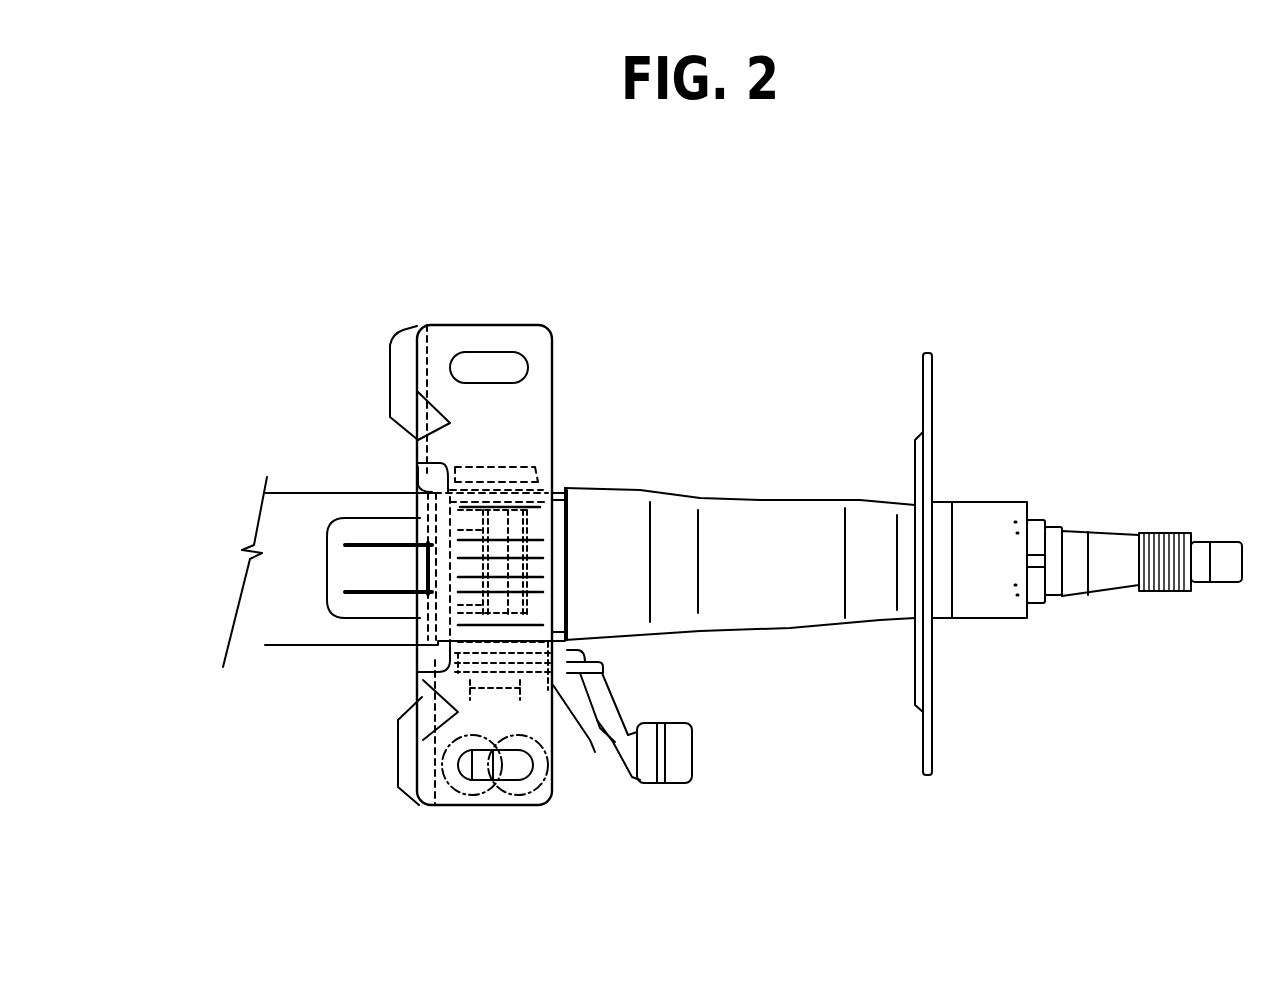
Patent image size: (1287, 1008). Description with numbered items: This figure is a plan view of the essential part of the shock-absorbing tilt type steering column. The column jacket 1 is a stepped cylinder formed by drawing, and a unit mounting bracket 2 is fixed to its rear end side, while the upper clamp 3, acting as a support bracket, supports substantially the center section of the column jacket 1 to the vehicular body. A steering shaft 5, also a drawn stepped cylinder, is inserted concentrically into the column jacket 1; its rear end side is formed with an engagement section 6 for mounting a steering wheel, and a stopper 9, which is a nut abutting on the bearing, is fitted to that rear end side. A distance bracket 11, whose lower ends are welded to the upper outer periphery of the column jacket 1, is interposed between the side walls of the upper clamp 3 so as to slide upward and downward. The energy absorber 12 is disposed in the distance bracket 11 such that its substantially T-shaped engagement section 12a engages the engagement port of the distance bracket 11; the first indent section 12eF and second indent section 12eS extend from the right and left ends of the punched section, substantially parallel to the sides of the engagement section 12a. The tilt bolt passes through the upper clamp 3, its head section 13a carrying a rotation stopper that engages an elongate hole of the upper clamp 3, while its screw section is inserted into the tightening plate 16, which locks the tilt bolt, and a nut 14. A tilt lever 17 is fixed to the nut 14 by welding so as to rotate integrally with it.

The column jacket 1 is at (773, 512).
The unit mounting bracket 2 is at (932, 388).
The upper clamp 3 is at (563, 395).
The steering shaft 5 is at (1112, 590).
The engagement section 6 is at (1160, 530).
The stopper 9 is at (1036, 540).
The distance bracket 11 is at (568, 535).
The energy absorber 12 is at (330, 591).
The engagement section 12a is at (427, 573).
The first indent section 12eF is at (352, 543).
The second indent section 12eS is at (380, 600).
The head section 13a is at (535, 467).
The nut 14 is at (475, 678).
The tightening plate 16 is at (568, 628).
The tilt lever 17 is at (595, 752).